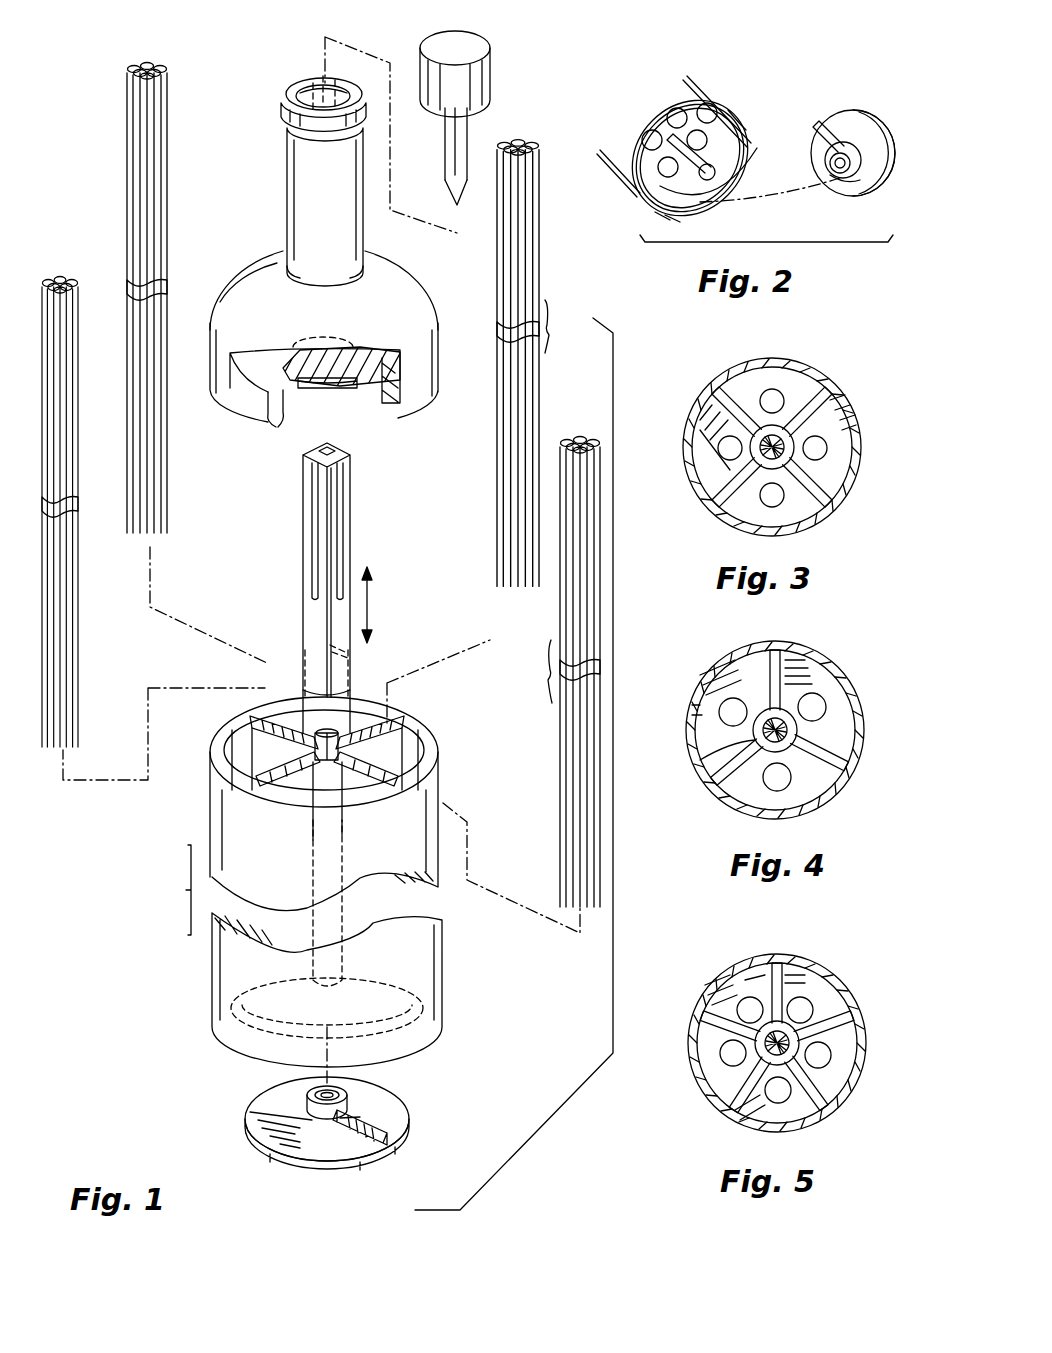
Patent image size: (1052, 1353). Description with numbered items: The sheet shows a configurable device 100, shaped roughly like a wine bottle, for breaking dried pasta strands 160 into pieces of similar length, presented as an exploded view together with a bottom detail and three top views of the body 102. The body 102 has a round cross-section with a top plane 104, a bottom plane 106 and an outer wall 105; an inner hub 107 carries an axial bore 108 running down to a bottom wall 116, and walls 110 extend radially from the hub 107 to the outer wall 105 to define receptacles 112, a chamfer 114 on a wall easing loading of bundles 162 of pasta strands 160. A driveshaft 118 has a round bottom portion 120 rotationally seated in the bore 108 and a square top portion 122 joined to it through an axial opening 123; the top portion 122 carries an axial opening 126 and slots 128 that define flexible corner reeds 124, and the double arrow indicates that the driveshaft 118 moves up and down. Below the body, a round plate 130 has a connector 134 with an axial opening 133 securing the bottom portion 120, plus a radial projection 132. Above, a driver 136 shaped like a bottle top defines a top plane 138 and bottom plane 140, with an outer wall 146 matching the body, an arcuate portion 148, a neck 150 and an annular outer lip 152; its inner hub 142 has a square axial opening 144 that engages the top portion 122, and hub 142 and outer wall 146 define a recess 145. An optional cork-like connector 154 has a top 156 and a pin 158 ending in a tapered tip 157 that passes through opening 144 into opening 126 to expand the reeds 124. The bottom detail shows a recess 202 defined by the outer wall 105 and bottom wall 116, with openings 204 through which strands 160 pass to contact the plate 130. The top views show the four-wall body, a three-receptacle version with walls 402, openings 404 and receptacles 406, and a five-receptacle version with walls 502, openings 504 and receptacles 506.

In FIG. 1, the configurable device 100 is at (205, 97).
In FIG. 1, the body 102 is at (185, 888).
In FIG. 2, the body 102 is at (705, 70).
In FIG. 3, the body 102 is at (845, 385).
In FIG. 4, the body 102 is at (835, 662).
In FIG. 5, the body 102 is at (832, 970).
In FIG. 1, the top plane 104 is at (420, 720).
In FIG. 1, the outer wall 105 is at (445, 745).
In FIG. 2, the outer wall 105 is at (750, 118).
In FIG. 1, the bottom plane 106 is at (215, 1045).
In FIG. 1, the inner hub 107 is at (315, 805).
In FIG. 3, the inner hub 107 is at (710, 490).
In FIG. 4, the inner hub 107 is at (710, 755).
In FIG. 1, the axial bore 108 is at (310, 950).
In FIG. 1, the walls 110 is at (232, 740).
In FIG. 3, the walls 110 is at (735, 365).
In FIG. 1, the receptacles 112 is at (245, 725).
In FIG. 3, the receptacles 112 is at (835, 475).
In FIG. 1, the chamfer 114 is at (262, 695).
In FIG. 1, the bottom wall 116 is at (440, 1040).
In FIG. 2, the bottom wall 116 is at (730, 98).
In FIG. 1, the driveshaft 118 is at (370, 535).
In FIG. 3, the driveshaft 118 is at (795, 413).
In FIG. 4, the driveshaft 118 is at (760, 770).
In FIG. 5, the driveshaft 118 is at (740, 1055).
In FIG. 1, the bottom portion 120 is at (360, 700).
In FIG. 2, the bottom portion 120 is at (735, 158).
In FIG. 1, the top portion 122 is at (310, 620).
In FIG. 1, the axial opening 123 is at (310, 665).
In FIG. 1, the corner reeds 124 is at (345, 478).
In FIG. 1, the axial opening 126 is at (320, 440).
In FIG. 1, the slots 128 is at (315, 500).
In FIG. 1, the plate 130 is at (410, 1150).
In FIG. 2, the plate 130 is at (890, 118).
In FIG. 1, the projection 132 is at (385, 1125).
In FIG. 2, the projection 132 is at (830, 135).
In FIG. 1, the axial opening 133 is at (312, 1096).
In FIG. 1, the connector 134 is at (330, 1120).
In FIG. 2, the connector 134 is at (830, 170).
In FIG. 1, the driver 136 is at (217, 283).
In FIG. 1, the top plane 138 is at (283, 90).
In FIG. 1, the bottom plane 140 is at (430, 390).
In FIG. 1, the inner hub 142 is at (345, 345).
In FIG. 1, the axial opening 144 is at (313, 78).
In FIG. 1, the recess 145 is at (338, 392).
In FIG. 1, the outer wall 146 is at (445, 330).
In FIG. 1, the arcuate portion 148 is at (275, 248).
In FIG. 1, the neck 150 is at (287, 190).
In FIG. 1, the annular outer lip 152 is at (278, 128).
In FIG. 1, the connector 154 is at (500, 72).
In FIG. 1, the top 156 is at (438, 98).
In FIG. 1, the plug tip 157 is at (450, 197).
In FIG. 1, the pin 158 is at (445, 157).
In FIG. 1, the dried pasta strands 160 is at (130, 130).
In FIG. 1, the bundles 162 is at (112, 270).
In FIG. 2, the recess 202 is at (672, 200).
In FIG. 2, the openings 204 is at (640, 140).
In FIG. 3, the openings 204 is at (820, 445).
In FIG. 4, the walls 402 is at (755, 660).
In FIG. 4, the openings 404 is at (812, 710).
In FIG. 4, the receptacles 406 is at (830, 750).
In FIG. 5, the walls 502 is at (770, 975).
In FIG. 5, the openings 504 is at (810, 1012).
In FIG. 5, the receptacles 506 is at (832, 1085).